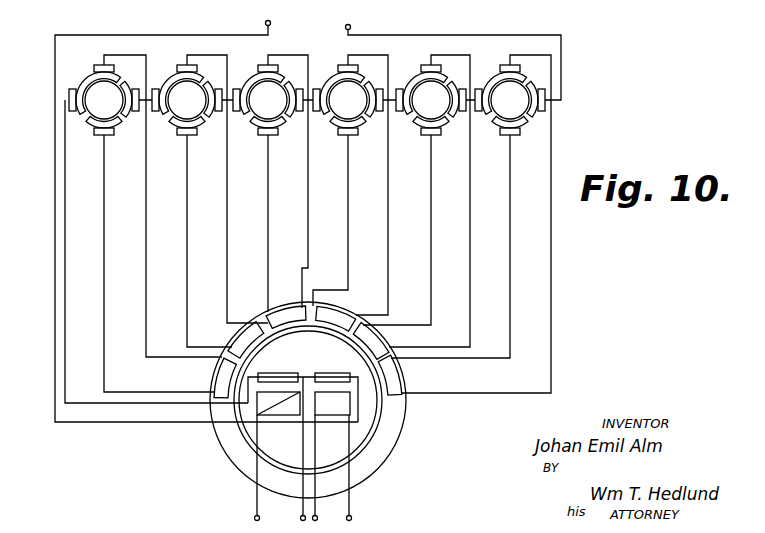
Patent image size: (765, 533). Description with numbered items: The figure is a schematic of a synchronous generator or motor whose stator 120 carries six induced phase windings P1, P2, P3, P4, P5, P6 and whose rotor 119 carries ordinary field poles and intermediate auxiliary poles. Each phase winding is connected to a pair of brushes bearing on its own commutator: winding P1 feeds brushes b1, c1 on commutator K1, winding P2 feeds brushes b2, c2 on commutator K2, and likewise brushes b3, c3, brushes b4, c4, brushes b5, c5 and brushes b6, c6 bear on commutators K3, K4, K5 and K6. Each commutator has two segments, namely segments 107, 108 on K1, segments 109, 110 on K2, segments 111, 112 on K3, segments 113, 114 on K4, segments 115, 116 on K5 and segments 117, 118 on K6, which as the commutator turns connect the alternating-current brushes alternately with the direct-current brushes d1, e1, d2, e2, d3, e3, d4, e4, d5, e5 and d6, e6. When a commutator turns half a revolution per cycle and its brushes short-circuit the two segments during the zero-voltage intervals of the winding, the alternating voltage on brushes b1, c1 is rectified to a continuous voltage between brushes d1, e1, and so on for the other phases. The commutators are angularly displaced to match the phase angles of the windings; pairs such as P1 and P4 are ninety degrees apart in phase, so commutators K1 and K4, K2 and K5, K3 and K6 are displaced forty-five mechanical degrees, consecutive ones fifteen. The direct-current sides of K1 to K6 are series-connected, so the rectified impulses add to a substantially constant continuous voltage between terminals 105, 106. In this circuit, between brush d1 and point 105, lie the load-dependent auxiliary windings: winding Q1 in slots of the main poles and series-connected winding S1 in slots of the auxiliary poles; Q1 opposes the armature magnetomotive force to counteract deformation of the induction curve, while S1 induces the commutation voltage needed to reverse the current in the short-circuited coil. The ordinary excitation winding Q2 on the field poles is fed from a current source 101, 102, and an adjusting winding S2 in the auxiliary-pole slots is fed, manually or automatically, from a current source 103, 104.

The current source 101 is at (254, 517).
The current source 102 is at (300, 517).
The current source 103 is at (323, 512).
The current source 104 is at (352, 517).
The terminal 105 is at (268, 21).
The terminal 106 is at (348, 25).
The commutator segment 107 is at (91, 82).
The commutator segment 108 is at (113, 134).
The commutator segment 109 is at (178, 75).
The commutator segment 110 is at (194, 134).
The commutator segment 111 is at (259, 77).
The commutator segment 112 is at (274, 134).
The commutator segment 113 is at (342, 78).
The commutator segment 114 is at (356, 135).
The commutator segment 115 is at (420, 77).
The commutator segment 116 is at (441, 134).
The commutator segment 117 is at (539, 89).
The commutator segment 118 is at (500, 132).
The rotor 119 is at (372, 428).
The stator 120 is at (388, 459).
The commutator K1 is at (100, 98).
The commutator K2 is at (188, 94).
The commutator K3 is at (269, 99).
The commutator K4 is at (348, 99).
The commutator K5 is at (431, 98).
The commutator K6 is at (513, 107).
The induced winding P1 is at (212, 378).
The induced winding P2 is at (242, 335).
The induced winding P3 is at (285, 312).
The induced winding P4 is at (334, 316).
The induced winding P5 is at (380, 340).
The induced winding P6 is at (398, 380).
The auxiliary winding Q1 is at (279, 367).
The excitation winding Q2 is at (289, 408).
The commutation winding S1 is at (337, 375).
The adjusting winding S2 is at (332, 393).
The brush b1 is at (104, 57).
The brush c1 is at (95, 140).
The brush d1 is at (67, 91).
The brush e1 is at (135, 111).
The brush b2 is at (185, 62).
The brush c2 is at (177, 140).
The brush d2 is at (157, 91).
The brush e2 is at (219, 111).
The brush b3 is at (263, 62).
The brush c3 is at (259, 143).
The brush d3 is at (239, 91).
The brush e3 is at (299, 112).
The brush b4 is at (344, 65).
The brush c4 is at (341, 141).
The brush d4 is at (319, 112).
The brush e4 is at (375, 112).
The brush b5 is at (429, 58).
The brush c5 is at (422, 141).
The brush d5 is at (399, 87).
The brush e5 is at (459, 88).
The brush b6 is at (504, 60).
The brush c6 is at (502, 147).
The brush d6 is at (481, 88).
The brush e6 is at (536, 117).